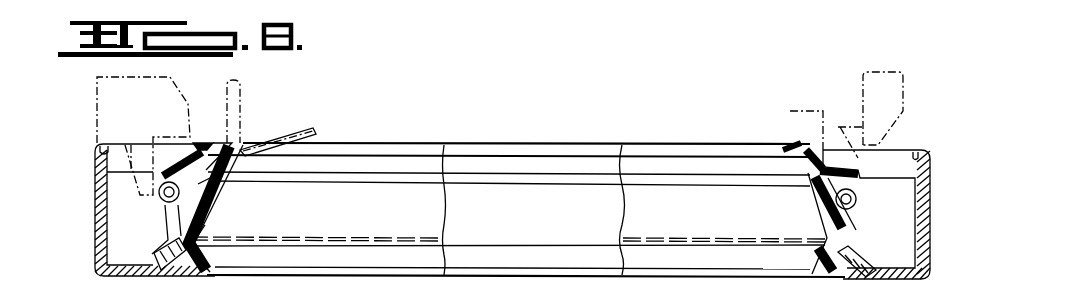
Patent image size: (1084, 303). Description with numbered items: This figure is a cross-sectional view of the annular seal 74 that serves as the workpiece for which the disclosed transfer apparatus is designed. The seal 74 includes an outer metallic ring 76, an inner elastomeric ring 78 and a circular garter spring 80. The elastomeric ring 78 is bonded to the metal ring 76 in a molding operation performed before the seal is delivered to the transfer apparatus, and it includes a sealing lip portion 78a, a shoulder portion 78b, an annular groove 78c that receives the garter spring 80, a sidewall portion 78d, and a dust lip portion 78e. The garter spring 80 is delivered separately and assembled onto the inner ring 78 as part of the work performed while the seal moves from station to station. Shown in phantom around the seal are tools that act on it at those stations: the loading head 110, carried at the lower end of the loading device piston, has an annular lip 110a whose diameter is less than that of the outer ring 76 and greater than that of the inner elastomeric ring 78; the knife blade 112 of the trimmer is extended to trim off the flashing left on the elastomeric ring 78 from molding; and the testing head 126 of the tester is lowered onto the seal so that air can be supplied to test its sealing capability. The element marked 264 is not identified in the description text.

The annular seal 74 is at (497, 124).
The outer metallic ring 76 is at (542, 223).
The inner elastomeric ring 78 is at (208, 224).
The sealing lip portion 78a is at (241, 143).
The shoulder portion 78b is at (187, 160).
The annular groove 78c is at (199, 183).
The sidewall portion 78d is at (198, 231).
The dust lip portion 78e is at (200, 262).
The circular garter spring 80 is at (165, 205).
The loading head 110 is at (96, 94).
The annular lip 110a is at (120, 183).
The knife blade 112 is at (247, 91).
The testing head 126 is at (794, 108).
The phantom member 264 is at (905, 84).